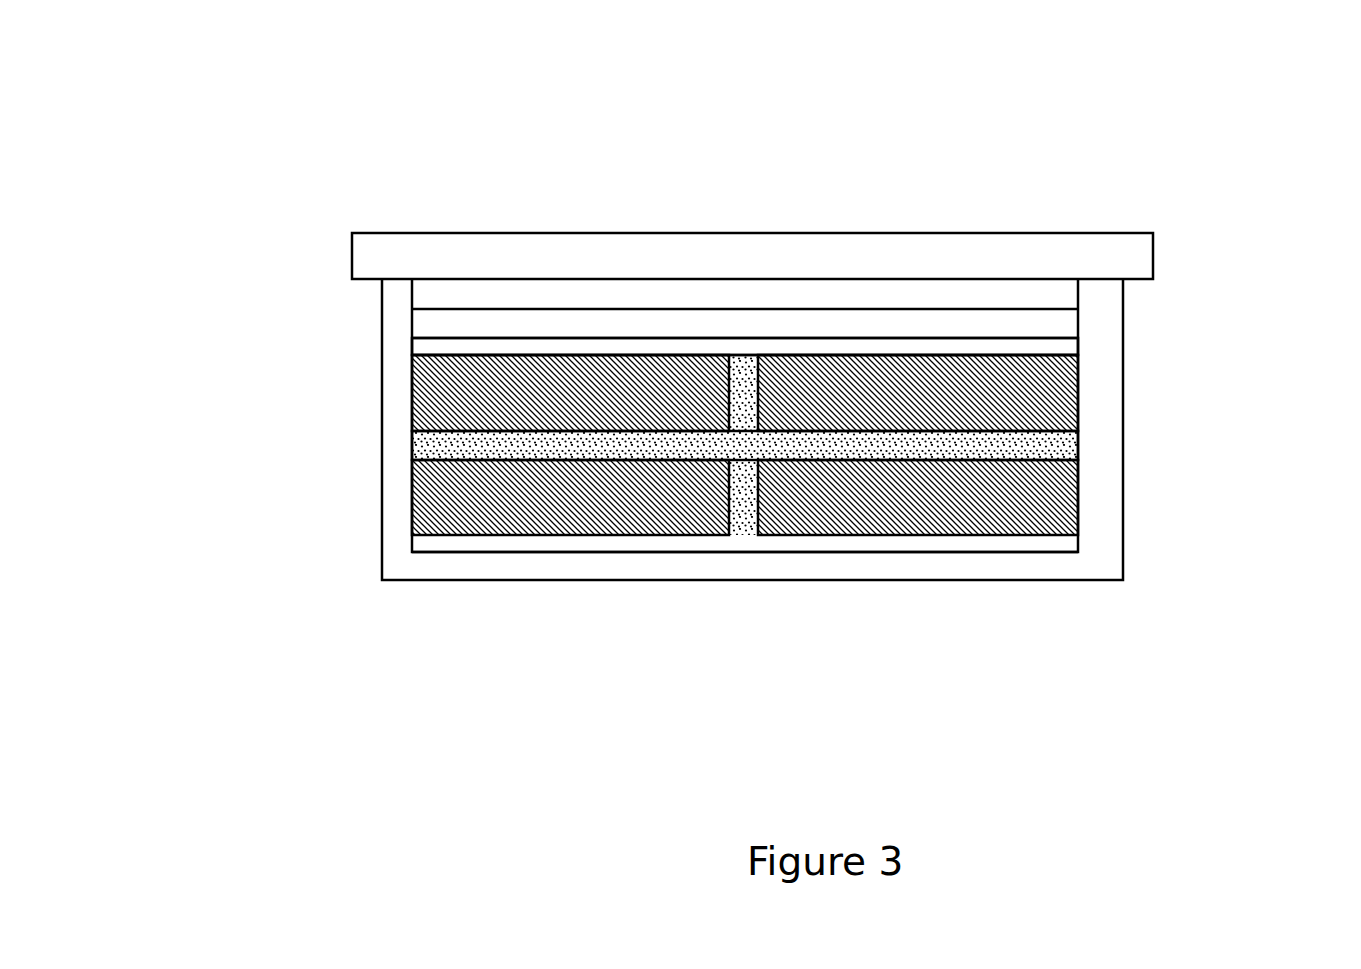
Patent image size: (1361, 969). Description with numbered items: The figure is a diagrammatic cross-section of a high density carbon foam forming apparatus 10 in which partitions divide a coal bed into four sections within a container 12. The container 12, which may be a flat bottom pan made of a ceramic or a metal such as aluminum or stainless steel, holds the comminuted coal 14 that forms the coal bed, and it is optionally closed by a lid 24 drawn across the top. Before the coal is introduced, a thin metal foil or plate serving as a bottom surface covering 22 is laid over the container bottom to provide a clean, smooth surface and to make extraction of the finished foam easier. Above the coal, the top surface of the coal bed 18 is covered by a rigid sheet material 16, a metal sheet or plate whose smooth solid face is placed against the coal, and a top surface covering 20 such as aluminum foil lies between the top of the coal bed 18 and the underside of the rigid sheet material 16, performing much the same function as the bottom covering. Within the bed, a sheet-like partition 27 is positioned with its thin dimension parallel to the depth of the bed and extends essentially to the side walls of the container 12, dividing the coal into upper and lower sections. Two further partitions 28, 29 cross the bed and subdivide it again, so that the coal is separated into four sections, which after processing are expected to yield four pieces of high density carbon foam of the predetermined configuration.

The high density carbon foam forming apparatus 10 is at (503, 157).
The container 12 is at (848, 429).
The comminuted coal 14 is at (1055, 413).
The rigid sheet material 16 is at (1007, 325).
The top surface of the coal bed 18 is at (580, 355).
The top surface covering 20 is at (640, 307).
The bottom surface covering 22 is at (892, 545).
The lid 24 is at (873, 252).
The partition 27 is at (648, 589).
The partition 28 is at (586, 559).
The partition 29 is at (669, 608).